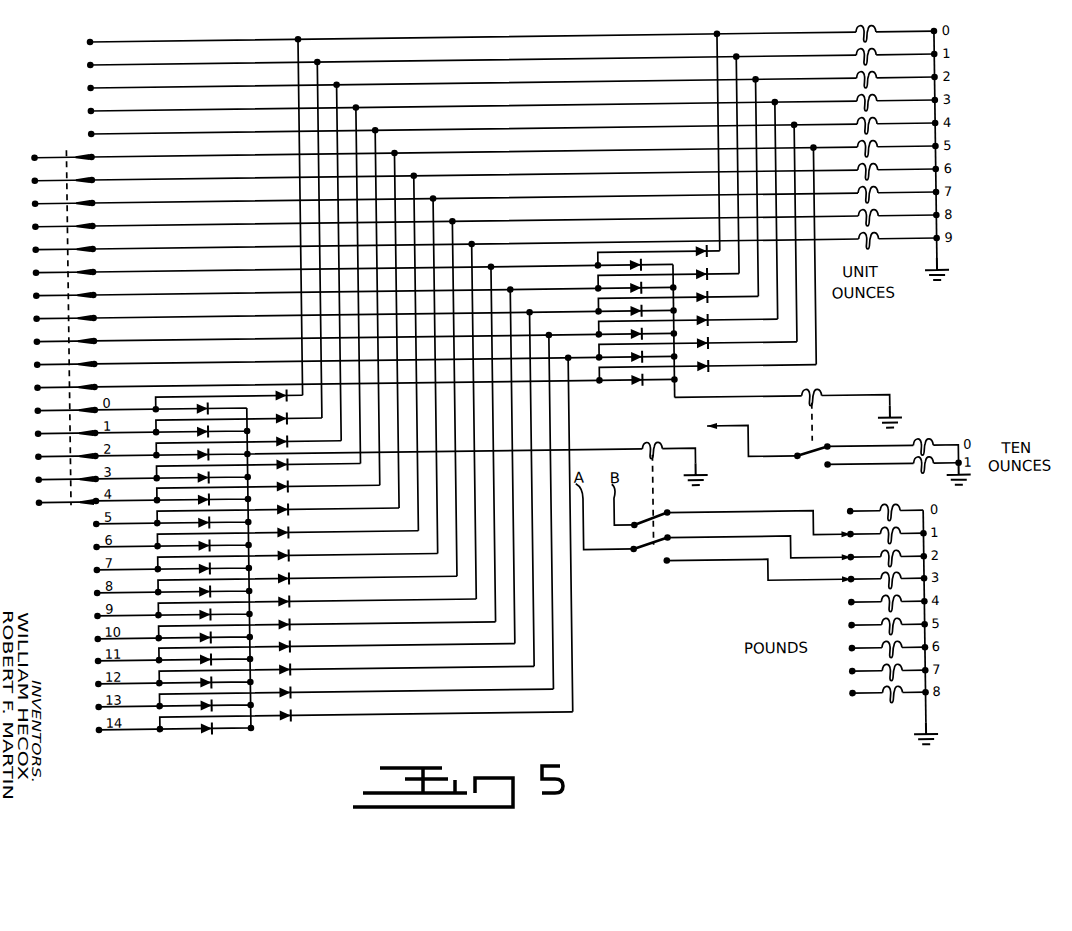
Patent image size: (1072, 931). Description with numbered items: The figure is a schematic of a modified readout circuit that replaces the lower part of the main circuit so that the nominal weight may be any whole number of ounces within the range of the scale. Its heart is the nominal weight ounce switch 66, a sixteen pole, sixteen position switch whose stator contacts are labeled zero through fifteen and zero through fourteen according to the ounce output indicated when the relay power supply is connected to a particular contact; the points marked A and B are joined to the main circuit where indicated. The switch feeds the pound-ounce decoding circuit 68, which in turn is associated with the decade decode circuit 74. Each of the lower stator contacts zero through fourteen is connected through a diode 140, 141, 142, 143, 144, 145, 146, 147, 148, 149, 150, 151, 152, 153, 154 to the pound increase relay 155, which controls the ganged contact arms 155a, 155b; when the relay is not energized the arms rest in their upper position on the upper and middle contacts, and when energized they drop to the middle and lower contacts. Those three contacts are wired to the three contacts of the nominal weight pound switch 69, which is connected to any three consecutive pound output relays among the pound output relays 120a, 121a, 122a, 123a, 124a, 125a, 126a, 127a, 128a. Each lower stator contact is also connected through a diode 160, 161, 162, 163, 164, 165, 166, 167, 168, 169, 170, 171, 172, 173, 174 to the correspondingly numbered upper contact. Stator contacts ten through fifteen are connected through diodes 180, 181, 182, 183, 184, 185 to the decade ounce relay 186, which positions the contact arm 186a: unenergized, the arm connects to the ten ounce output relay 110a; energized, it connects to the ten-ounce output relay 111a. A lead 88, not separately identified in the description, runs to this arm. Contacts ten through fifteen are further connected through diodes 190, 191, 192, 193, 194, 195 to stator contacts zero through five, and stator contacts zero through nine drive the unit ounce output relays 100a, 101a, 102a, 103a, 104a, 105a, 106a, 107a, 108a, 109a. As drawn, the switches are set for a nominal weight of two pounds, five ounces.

The nominal weight ounce switch 66 is at (35, 141).
The pound-ounce decoding circuit 68 is at (489, 36).
The decade decode circuit 74 is at (830, 348).
The conductor 88 is at (745, 435).
The nominal weight pound switch 69 is at (818, 520).
The unit ounce output relay 100a is at (873, 38).
The unit ounce output relay 101a is at (873, 61).
The unit ounce output relay 102a is at (873, 84).
The unit ounce output relay 103a is at (873, 107).
The unit ounce output relay 104a is at (873, 130).
The unit ounce output relay 105a is at (873, 153).
The unit ounce output relay 106a is at (873, 176).
The unit ounce output relay 107a is at (873, 199).
The unit ounce output relay 108a is at (873, 222).
The unit ounce output relay 109a is at (873, 245).
The ten ounce output relay 110a is at (921, 450).
The ten-ounce output relay 111a is at (911, 479).
The pound output relay 120a is at (887, 514).
The pound output relay 121a is at (883, 539).
The pound output relay 122a is at (883, 562).
The pound output relay 123a is at (883, 584).
The pound output relay 124a is at (883, 607).
The pound output relay 125a is at (883, 630).
The pound output relay 126a is at (883, 653).
The pound output relay 127a is at (883, 676).
The pound output relay 128a is at (883, 698).
The diode 140 is at (197, 404).
The diode 141 is at (205, 428).
The diode 142 is at (205, 460).
The diode 143 is at (205, 483).
The diode 144 is at (205, 505).
The diode 145 is at (205, 528).
The diode 146 is at (205, 551).
The diode 147 is at (205, 574).
The diode 148 is at (205, 597).
The diode 149 is at (205, 620).
The diode 150 is at (205, 643).
The diode 151 is at (205, 665).
The diode 152 is at (205, 688).
The diode 153 is at (205, 711).
The diode 154 is at (200, 735).
The pound increase relay 155 is at (642, 450).
The contact arm 155a is at (661, 519).
The contact arm 155b is at (641, 553).
The diode 160 is at (279, 392).
The diode 161 is at (283, 416).
The diode 162 is at (284, 440).
The diode 163 is at (289, 468).
The diode 164 is at (289, 490).
The diode 165 is at (289, 513).
The diode 166 is at (289, 536).
The diode 167 is at (289, 559).
The diode 168 is at (289, 582).
The diode 169 is at (289, 605).
The diode 170 is at (289, 628).
The diode 171 is at (289, 650).
The diode 172 is at (289, 673).
The diode 173 is at (289, 696).
The diode 174 is at (289, 719).
The diode 180 is at (629, 266).
The diode 181 is at (640, 291).
The diode 182 is at (640, 314).
The diode 183 is at (640, 337).
The diode 184 is at (640, 360).
The diode 185 is at (636, 391).
The decade ounce relay 186 is at (816, 400).
The contact arm 186a is at (793, 469).
The diode 190 is at (697, 254).
The diode 191 is at (705, 277).
The diode 192 is at (705, 300).
The diode 193 is at (705, 323).
The diode 194 is at (705, 346).
The diode 195 is at (707, 371).